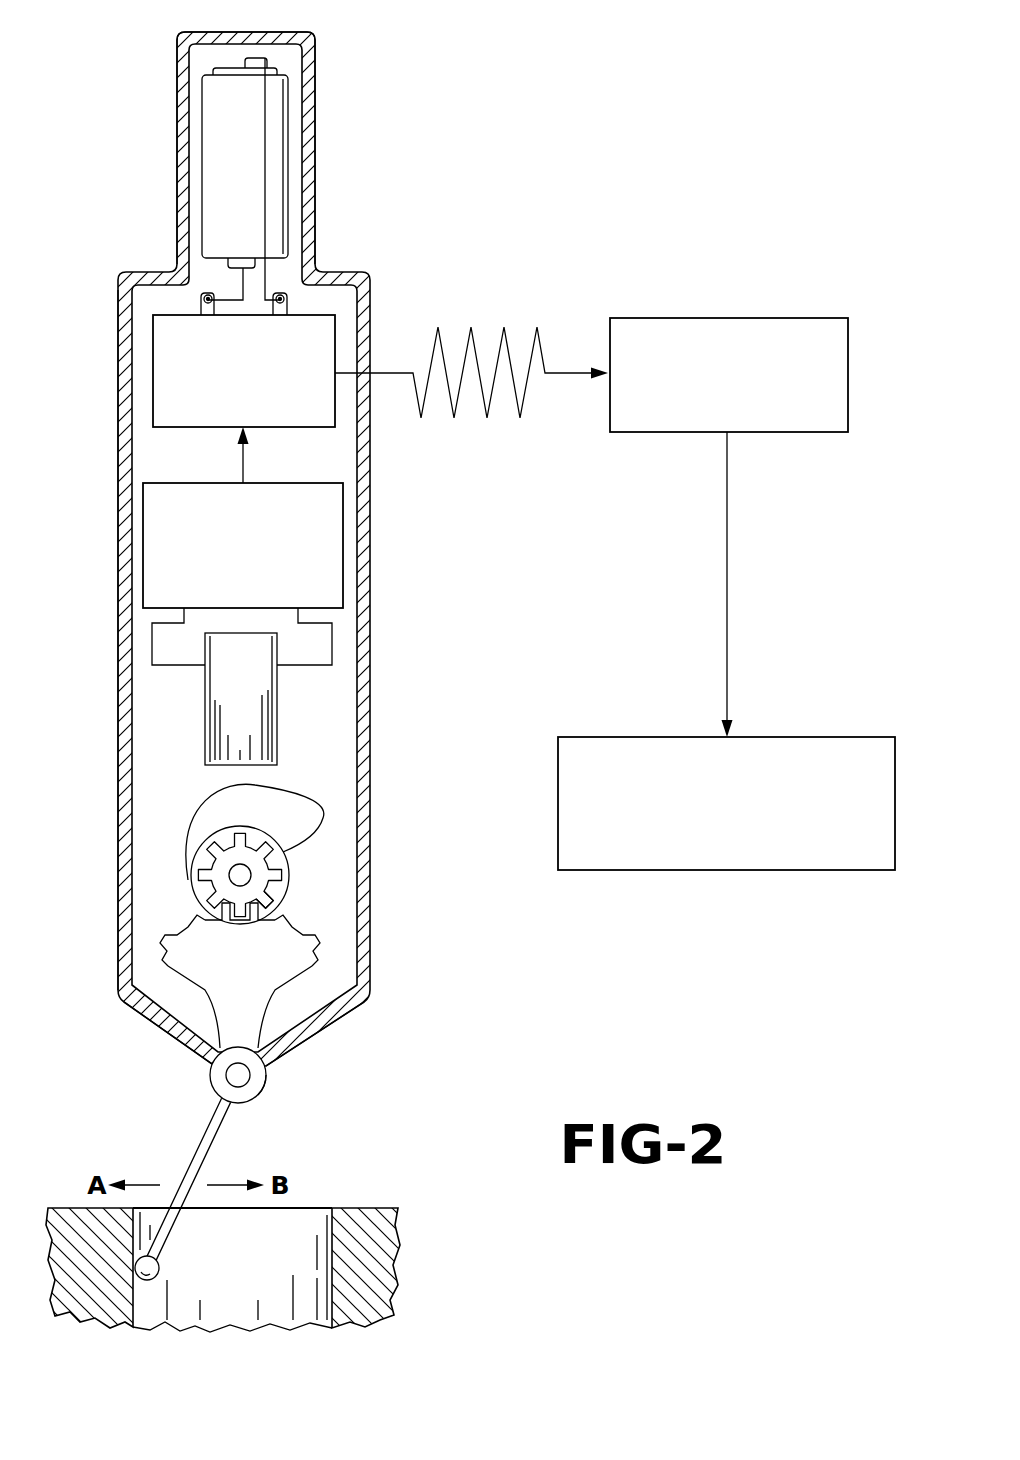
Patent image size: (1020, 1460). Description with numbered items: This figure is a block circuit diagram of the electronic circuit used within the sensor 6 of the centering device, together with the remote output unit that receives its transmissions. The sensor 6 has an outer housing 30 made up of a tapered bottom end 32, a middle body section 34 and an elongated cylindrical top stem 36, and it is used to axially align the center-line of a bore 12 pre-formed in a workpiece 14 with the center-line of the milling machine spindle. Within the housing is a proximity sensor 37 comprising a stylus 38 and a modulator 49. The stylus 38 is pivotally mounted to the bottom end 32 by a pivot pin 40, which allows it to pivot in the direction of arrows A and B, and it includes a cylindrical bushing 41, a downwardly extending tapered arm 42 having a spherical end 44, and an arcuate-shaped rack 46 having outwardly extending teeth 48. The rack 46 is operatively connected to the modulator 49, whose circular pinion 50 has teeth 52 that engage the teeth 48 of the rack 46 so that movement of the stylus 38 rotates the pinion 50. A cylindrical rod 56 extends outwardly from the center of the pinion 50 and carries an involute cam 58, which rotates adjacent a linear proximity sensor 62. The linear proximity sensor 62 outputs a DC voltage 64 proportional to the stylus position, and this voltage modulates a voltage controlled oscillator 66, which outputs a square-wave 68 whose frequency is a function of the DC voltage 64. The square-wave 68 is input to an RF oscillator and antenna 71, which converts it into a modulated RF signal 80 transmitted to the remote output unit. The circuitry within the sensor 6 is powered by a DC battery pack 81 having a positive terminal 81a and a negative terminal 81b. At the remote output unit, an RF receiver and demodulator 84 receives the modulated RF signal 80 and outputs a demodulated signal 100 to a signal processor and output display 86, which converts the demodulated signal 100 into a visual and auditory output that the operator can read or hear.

The sensor 6 is at (340, 268).
The bore 12 is at (330, 1276).
The workpiece 14 is at (360, 1207).
The outer housing 30 is at (372, 590).
The tapered bottom end 32 is at (150, 1028).
The middle body section 34 is at (122, 758).
The elongated cylindrical top stem 36 is at (178, 152).
The proximity sensor 37 is at (239, 861).
The stylus 38 is at (205, 1083).
The pivot pin 40 is at (245, 1077).
The cylindrical bushing 41 is at (250, 1095).
The tapered arm 42 is at (200, 1148).
The spherical end 44 is at (158, 1265).
The arcuate-shaped rack 46 is at (239, 975).
The teeth 48 is at (192, 918).
The modulator 49 is at (193, 780).
The circular pinion 50 is at (213, 845).
The teeth 52 is at (272, 862).
The cylindrical rod 56 is at (242, 873).
The involute cam 58 is at (305, 815).
The linear proximity sensor 62 is at (268, 738).
The DC voltage 64 is at (332, 648).
The voltage controlled oscillator 66 is at (143, 518).
The square-wave 68 is at (243, 465).
The RF oscillator and antenna 71 is at (153, 346).
The modulated RF signal 80 is at (477, 348).
The DC battery pack 81 is at (283, 152).
The positive terminal 81a is at (233, 265).
The negative terminal 81b is at (245, 70).
The RF receiver and demodulator 84 is at (657, 318).
The signal processor and output display 86 is at (822, 737).
The demodulated signal 100 is at (725, 597).